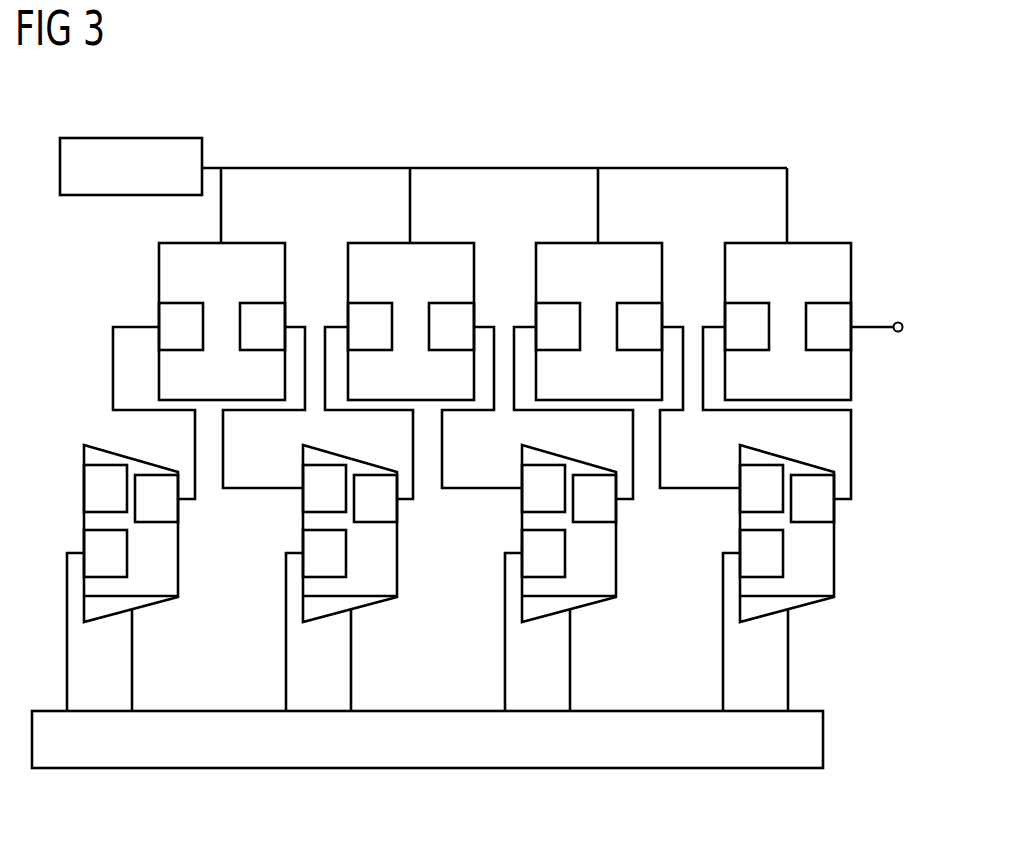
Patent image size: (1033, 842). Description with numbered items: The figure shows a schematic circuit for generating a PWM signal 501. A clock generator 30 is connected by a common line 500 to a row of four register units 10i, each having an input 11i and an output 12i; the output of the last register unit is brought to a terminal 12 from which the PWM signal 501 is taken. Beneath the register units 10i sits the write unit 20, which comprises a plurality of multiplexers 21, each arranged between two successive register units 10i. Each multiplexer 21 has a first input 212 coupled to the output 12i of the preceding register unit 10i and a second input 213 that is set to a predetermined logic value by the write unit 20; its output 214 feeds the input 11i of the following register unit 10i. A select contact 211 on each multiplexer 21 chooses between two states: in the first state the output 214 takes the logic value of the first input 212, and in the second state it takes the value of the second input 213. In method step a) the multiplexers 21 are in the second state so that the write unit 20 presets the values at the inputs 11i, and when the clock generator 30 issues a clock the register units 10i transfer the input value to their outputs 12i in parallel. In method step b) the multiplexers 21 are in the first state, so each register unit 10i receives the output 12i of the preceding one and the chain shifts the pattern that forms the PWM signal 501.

The clock generator 30 is at (135, 137).
The control line 500 is at (512, 165).
The register units 10i is at (225, 249).
The inputs of the register units 11i is at (181, 312).
The outputs of the register units 12i is at (255, 312).
The output terminal 12 is at (897, 320).
The PWM signal 501 is at (873, 333).
The multiplexers 21 is at (173, 566).
The select contact 211 is at (111, 610).
The first input 212 is at (89, 488).
The second input 213 is at (89, 543).
The output of the multiplexer 214 is at (157, 481).
The write unit 20 is at (428, 710).